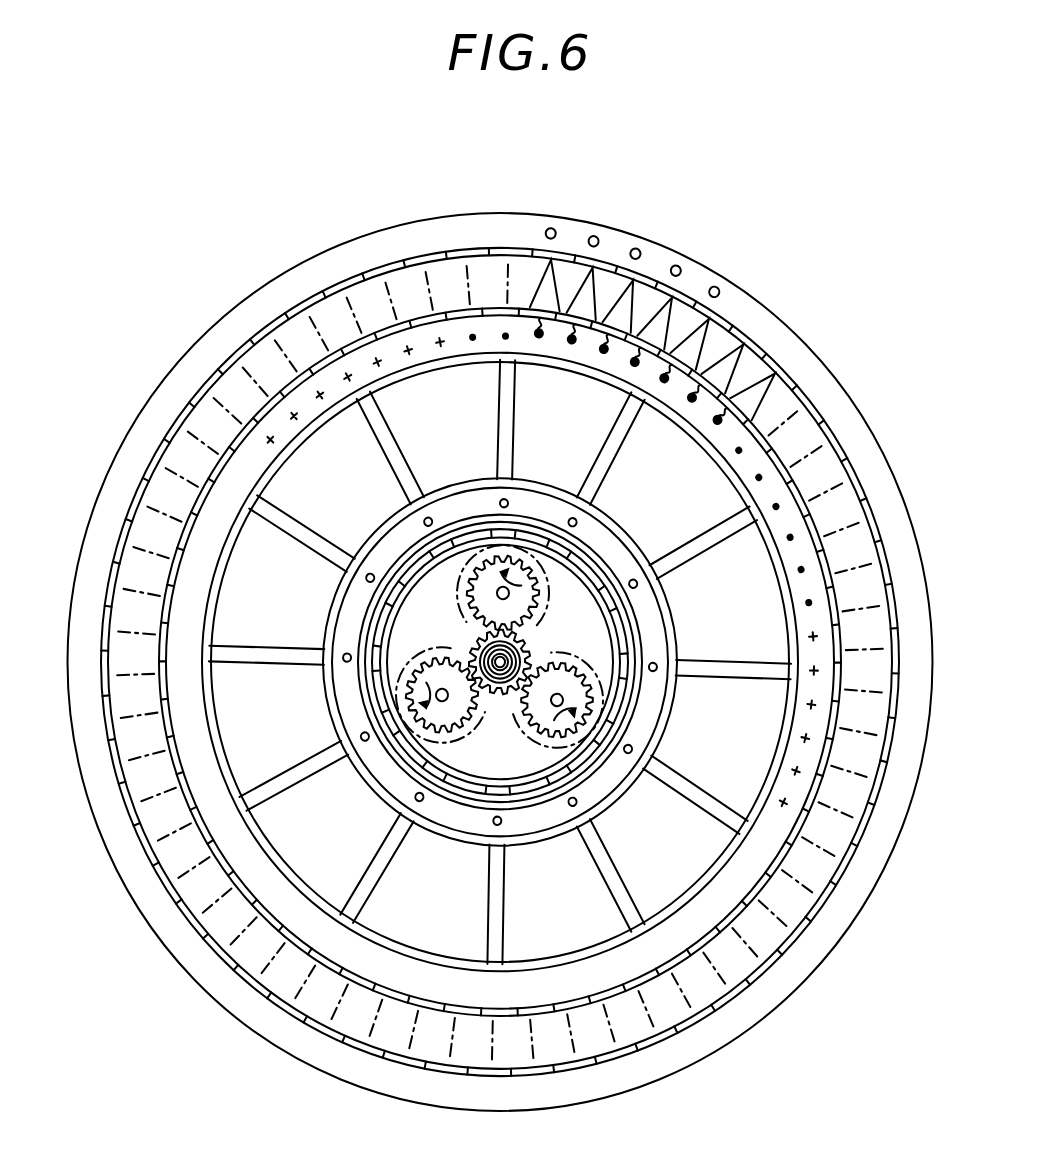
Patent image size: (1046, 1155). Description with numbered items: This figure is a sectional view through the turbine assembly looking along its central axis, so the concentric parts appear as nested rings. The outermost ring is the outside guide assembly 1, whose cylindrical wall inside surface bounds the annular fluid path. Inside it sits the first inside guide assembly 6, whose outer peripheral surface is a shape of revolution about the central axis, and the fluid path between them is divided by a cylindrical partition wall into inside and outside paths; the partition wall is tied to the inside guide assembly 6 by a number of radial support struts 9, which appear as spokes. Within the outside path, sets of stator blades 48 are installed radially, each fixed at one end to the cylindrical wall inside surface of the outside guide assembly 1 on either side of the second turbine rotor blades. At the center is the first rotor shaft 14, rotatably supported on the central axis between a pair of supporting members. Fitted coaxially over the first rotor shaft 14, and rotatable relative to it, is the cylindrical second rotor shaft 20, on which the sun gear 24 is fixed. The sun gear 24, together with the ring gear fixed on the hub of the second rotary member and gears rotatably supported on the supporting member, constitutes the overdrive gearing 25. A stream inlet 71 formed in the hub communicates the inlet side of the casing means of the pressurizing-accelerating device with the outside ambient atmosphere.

The outside guide assembly 1 is at (313, 250).
The support struts 9 is at (393, 432).
The stator blades 48 is at (557, 285).
The first inside guide assembly 6 is at (640, 546).
The stream inlet 71 is at (628, 637).
The overdrive gearing 25 is at (488, 741).
The second rotor shaft 20 is at (481, 639).
The sun gear 24 is at (470, 648).
The first rotor shaft 14 is at (507, 684).